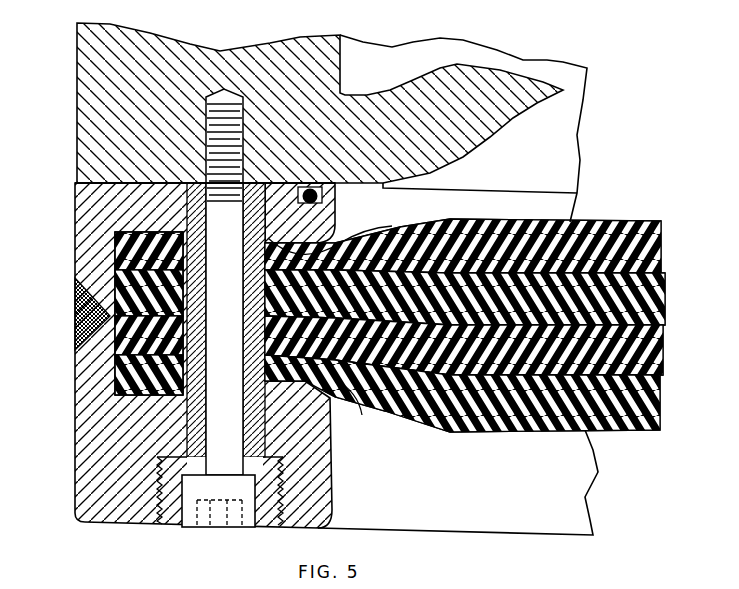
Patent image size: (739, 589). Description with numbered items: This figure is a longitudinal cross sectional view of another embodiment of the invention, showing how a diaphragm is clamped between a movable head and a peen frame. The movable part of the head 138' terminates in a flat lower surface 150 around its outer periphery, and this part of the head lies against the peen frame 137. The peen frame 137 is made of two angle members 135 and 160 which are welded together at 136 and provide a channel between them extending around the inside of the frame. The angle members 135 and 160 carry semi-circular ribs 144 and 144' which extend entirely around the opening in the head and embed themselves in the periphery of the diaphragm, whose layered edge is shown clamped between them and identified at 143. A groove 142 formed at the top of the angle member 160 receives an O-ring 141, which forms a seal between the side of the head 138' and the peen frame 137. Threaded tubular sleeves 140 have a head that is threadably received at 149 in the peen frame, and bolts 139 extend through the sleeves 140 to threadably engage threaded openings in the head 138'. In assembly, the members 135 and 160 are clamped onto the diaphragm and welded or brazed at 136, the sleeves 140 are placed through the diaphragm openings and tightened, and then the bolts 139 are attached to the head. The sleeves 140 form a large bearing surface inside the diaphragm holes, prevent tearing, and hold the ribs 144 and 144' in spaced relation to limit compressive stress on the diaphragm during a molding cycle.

The angle member 135 is at (73, 463).
The weld 136 is at (75, 318).
The peen frame 137 is at (75, 228).
The head 138' is at (290, 103).
The bolt 139 is at (223, 528).
The threaded tubular sleeve 140 is at (173, 528).
The O-ring 141 is at (300, 176).
The groove 142 is at (337, 195).
The laminate plies 143 is at (602, 221).
The semi-circular rib 144 is at (330, 230).
The semi-circular rib 144' is at (355, 409).
The threaded connection 149 is at (290, 462).
The flat lower surface 150 is at (292, 181).
The angle member 160 is at (76, 252).